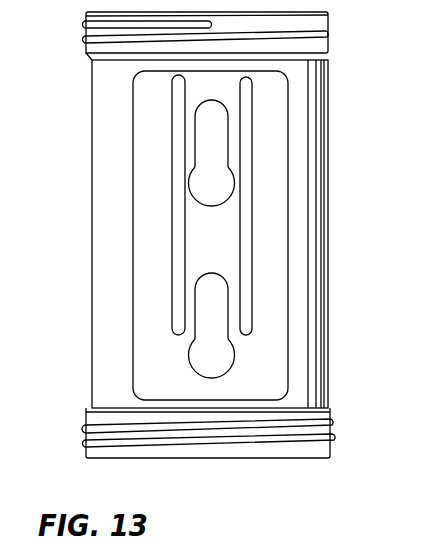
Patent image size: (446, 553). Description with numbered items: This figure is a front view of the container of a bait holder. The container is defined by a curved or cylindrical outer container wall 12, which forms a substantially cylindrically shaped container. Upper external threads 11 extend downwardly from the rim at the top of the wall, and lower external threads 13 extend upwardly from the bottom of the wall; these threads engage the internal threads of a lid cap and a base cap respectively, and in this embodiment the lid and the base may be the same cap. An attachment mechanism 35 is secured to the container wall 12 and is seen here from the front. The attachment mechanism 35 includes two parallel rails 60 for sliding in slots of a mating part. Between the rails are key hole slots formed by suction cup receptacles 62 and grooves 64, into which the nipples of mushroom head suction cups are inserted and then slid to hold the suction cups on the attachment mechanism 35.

The upper external threads 11 is at (332, 33).
The outer container wall 12 is at (308, 232).
The lower external threads 13 is at (336, 440).
The attachment mechanism 35 is at (288, 146).
The parallel rails 60 is at (178, 261).
The suction cup receptacles 62 is at (215, 180).
The grooves 64 is at (216, 113).